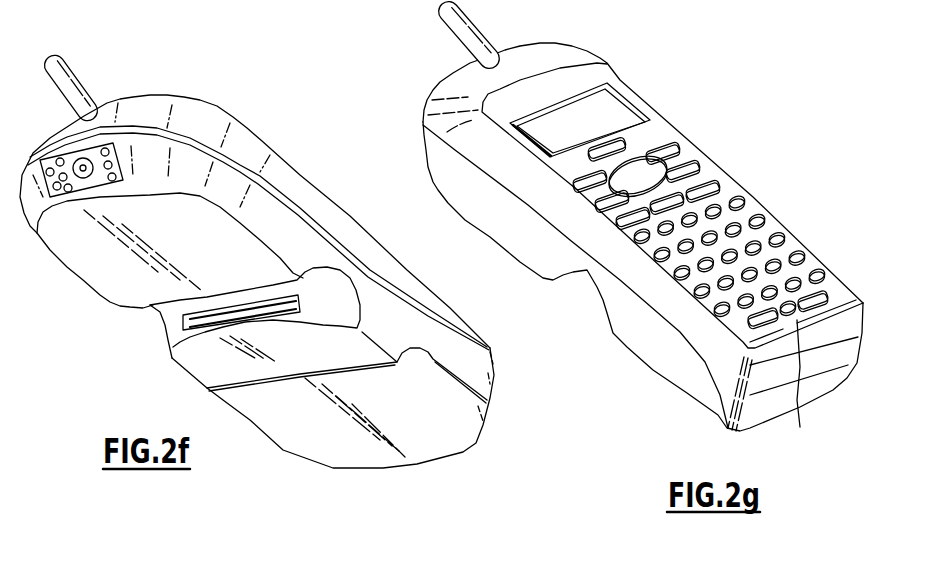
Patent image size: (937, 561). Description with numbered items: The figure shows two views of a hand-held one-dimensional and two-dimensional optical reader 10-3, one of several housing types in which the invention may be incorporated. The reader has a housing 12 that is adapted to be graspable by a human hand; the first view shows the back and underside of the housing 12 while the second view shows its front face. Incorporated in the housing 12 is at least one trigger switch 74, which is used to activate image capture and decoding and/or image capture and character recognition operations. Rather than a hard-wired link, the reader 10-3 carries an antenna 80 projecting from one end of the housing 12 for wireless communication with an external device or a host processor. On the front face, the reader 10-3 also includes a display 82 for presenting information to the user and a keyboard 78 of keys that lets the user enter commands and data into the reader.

In FIG. 2F, the optical reader 10-3 is at (273, 96).
In FIG. 2G, the optical reader 10-3 is at (675, 72).
In FIG. 2F, the housing 12 is at (310, 237).
In FIG. 2G, the housing 12 is at (527, 243).
In FIG. 2F, the trigger switch 74 is at (162, 330).
In FIG. 2G, the trigger switch 74 is at (647, 177).
In FIG. 2G, the keyboard 78 is at (800, 400).
In FIG. 2F, the antenna 80 is at (76, 73).
In FIG. 2G, the antenna 80 is at (472, 43).
In FIG. 2G, the display 82 is at (607, 123).